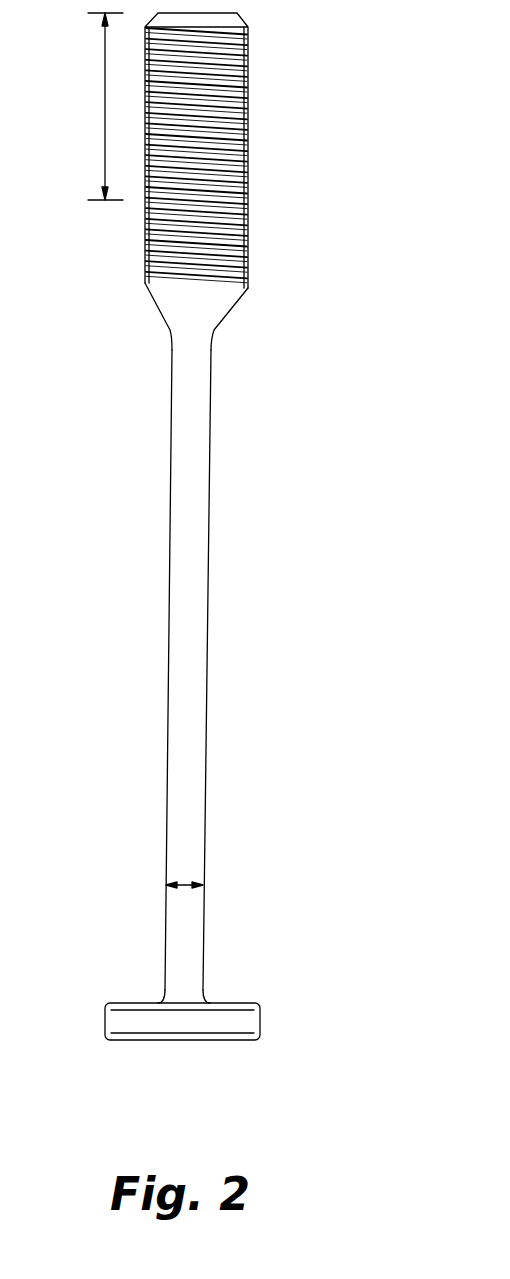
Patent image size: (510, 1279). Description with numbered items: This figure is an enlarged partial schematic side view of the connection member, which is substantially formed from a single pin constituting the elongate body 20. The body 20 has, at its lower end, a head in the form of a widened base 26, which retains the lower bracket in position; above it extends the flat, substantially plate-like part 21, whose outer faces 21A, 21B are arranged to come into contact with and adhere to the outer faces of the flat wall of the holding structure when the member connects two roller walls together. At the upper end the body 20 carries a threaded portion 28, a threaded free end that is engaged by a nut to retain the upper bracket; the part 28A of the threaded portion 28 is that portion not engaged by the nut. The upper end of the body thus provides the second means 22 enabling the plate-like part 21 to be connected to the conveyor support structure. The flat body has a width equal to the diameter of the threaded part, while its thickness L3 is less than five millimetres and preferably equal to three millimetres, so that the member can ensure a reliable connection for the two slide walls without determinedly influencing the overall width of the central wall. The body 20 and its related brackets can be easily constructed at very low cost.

The elongate body 20 is at (198, 562).
The plate-like part 21 is at (180, 636).
The outer face 21A is at (207, 752).
The outer face 21B is at (167, 811).
The second means 22 is at (200, 150).
The widened base 26 is at (235, 1025).
The threaded portion 28 is at (158, 237).
The part of the threaded portion 28A is at (84, 106).
The thickness L3 is at (187, 887).